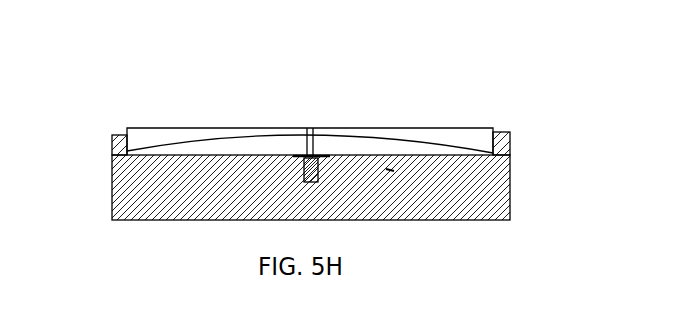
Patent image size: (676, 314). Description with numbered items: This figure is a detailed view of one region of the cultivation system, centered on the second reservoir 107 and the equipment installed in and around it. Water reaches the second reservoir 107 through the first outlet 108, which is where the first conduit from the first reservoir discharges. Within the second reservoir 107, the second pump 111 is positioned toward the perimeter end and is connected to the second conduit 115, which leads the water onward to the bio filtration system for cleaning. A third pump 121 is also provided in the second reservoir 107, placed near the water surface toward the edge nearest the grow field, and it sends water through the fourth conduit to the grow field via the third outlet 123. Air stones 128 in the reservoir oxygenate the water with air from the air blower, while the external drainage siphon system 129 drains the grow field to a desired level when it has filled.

The second reservoir 107 is at (230, 220).
The first outlet 108 is at (510, 142).
The second pump 111 is at (205, 156).
The second conduit 115 is at (115, 135).
The third pump 121 is at (327, 156).
The third outlet 123 is at (311, 126).
The air stones 128 is at (319, 175).
The external drainage siphon system 129 is at (360, 127).